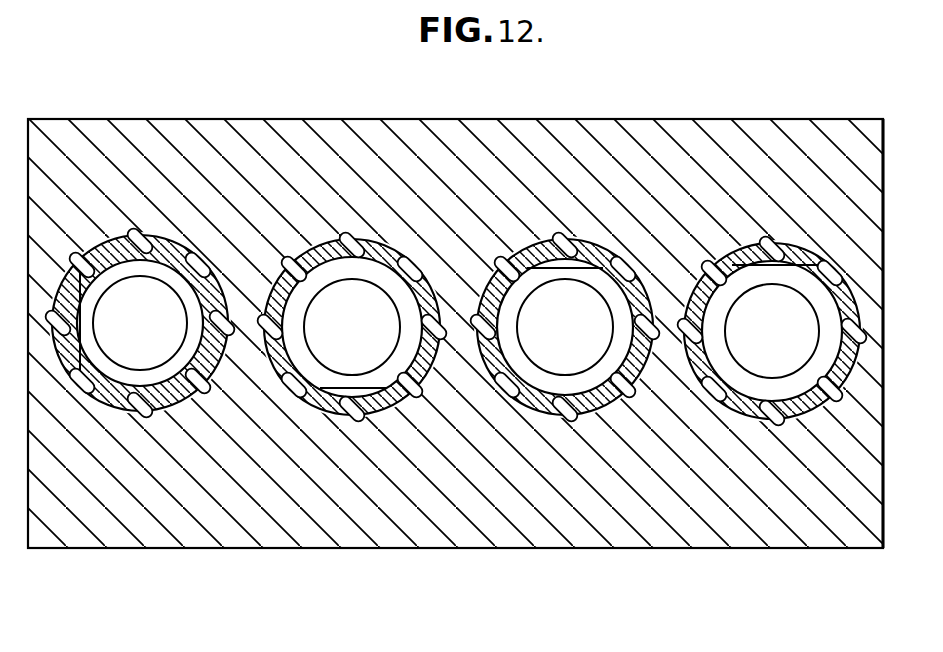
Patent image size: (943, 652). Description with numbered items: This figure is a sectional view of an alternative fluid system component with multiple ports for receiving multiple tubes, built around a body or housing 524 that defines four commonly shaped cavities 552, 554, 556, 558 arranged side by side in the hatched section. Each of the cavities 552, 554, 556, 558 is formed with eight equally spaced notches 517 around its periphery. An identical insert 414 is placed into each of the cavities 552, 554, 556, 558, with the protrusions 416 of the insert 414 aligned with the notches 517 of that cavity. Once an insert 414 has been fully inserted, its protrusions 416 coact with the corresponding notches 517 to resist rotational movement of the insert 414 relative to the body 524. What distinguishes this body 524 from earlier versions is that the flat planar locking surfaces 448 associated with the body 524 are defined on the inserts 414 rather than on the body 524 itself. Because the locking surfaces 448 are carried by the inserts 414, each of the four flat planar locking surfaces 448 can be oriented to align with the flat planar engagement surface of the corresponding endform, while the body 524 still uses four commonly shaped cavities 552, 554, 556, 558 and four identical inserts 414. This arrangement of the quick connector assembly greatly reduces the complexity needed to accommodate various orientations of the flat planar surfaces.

The insert 414 is at (540, 242).
The protrusions 416 is at (150, 415).
The flat planar locking surfaces 448 is at (98, 250).
The notches 517 is at (207, 250).
The body 524 is at (232, 530).
The cavity 552 is at (140, 323).
The cavity 554 is at (352, 327).
The cavity 556 is at (565, 327).
The cavity 558 is at (772, 331).